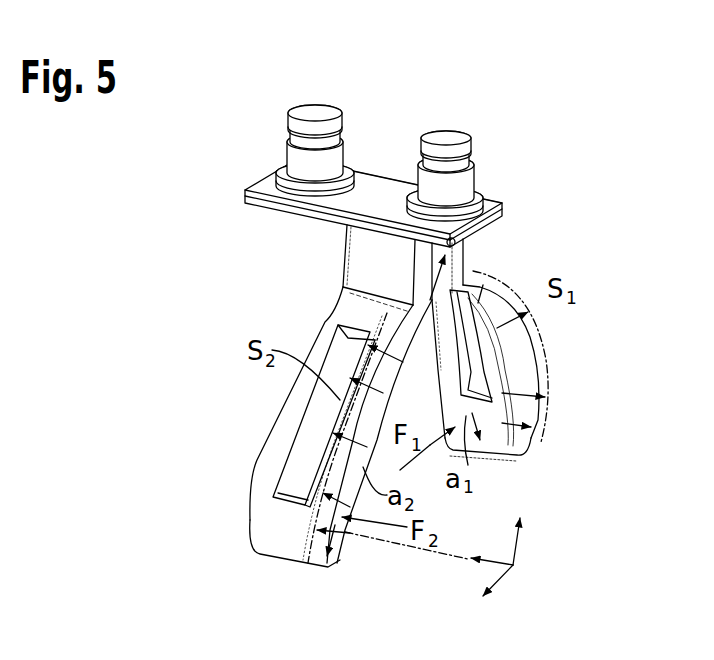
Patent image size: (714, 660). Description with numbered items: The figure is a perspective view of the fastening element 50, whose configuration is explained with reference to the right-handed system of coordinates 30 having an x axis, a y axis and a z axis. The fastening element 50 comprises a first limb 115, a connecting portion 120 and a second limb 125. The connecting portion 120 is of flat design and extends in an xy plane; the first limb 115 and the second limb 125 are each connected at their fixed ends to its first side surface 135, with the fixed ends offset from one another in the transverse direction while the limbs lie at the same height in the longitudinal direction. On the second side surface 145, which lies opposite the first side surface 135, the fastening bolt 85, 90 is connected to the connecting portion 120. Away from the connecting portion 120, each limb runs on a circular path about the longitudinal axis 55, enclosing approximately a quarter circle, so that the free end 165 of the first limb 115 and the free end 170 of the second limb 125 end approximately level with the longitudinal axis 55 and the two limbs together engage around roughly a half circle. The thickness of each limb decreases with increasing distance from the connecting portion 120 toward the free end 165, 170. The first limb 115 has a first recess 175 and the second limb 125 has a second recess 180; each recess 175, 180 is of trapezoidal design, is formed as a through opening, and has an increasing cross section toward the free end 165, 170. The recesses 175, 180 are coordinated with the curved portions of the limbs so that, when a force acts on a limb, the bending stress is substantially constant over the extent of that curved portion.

The system of coordinates 30 is at (535, 566).
The fastening element 50 is at (360, 413).
The longitudinal axis 55 is at (453, 556).
The fastening bolt 85 is at (290, 152).
The fastening bolt 90 is at (462, 185).
The first limb 115 is at (507, 397).
The connecting portion 120 is at (487, 207).
The second limb 125 is at (268, 478).
The first side surface 135 is at (480, 240).
The second side surface 145 is at (383, 190).
The free end of the first limb 165 is at (488, 444).
The free end of the second limb 170 is at (275, 557).
The first recess 175 is at (488, 362).
The second recess 180 is at (315, 424).